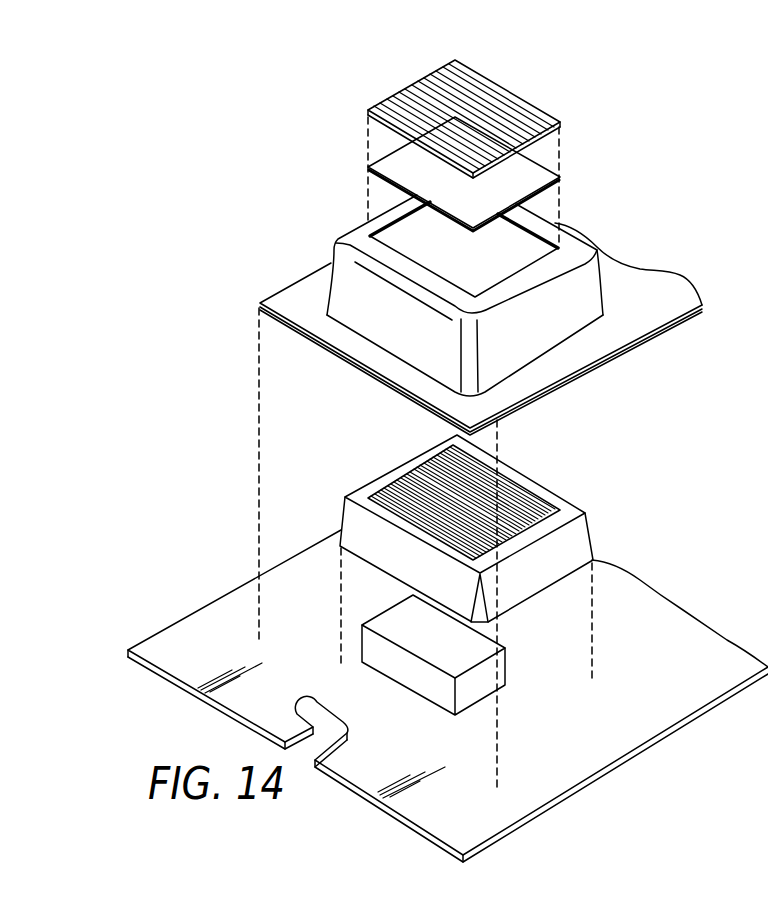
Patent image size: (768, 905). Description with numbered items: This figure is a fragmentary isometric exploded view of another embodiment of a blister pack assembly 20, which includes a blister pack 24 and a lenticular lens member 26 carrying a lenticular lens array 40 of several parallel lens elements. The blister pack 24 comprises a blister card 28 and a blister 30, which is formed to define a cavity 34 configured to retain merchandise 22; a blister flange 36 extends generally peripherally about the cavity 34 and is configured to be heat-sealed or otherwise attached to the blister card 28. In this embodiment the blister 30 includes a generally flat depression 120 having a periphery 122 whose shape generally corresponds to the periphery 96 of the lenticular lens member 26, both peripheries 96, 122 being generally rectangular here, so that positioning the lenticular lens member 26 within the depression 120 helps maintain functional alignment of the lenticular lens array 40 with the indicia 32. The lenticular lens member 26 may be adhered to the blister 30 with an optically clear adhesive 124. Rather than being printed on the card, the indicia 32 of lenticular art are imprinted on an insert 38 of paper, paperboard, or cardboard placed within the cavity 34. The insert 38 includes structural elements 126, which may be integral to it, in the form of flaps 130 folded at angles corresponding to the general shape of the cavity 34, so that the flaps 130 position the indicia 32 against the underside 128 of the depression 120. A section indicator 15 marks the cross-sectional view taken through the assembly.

The blister pack assembly 20 is at (258, 85).
The blister pack 24 is at (293, 90).
The lenticular lens member 26 is at (527, 80).
The lenticular lens array 40 is at (565, 90).
The periphery 96 is at (560, 124).
The optically clear adhesive 124 is at (383, 177).
The depression 120 is at (515, 226).
The blister 30 is at (340, 242).
The periphery 122 is at (418, 259).
The cavity 34 is at (553, 296).
The blister flange 36 is at (620, 333).
The underside 128 is at (458, 265).
The insert 38 is at (521, 456).
The indicia 32 is at (522, 510).
The structural elements 126 is at (598, 530).
The flaps 130 is at (377, 557).
The section line 15 is at (363, 593).
The merchandise 22 is at (503, 672).
The blister card 28 is at (580, 792).